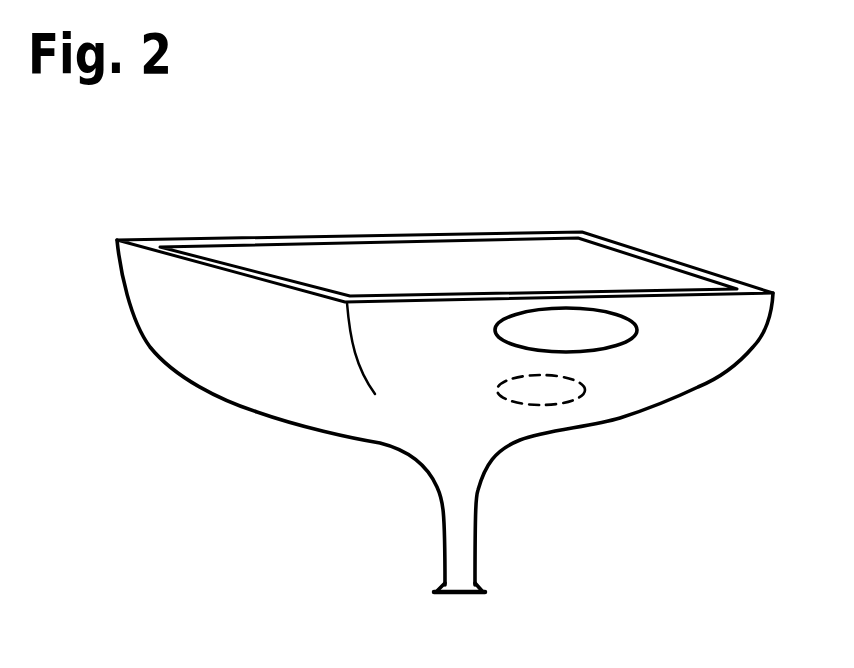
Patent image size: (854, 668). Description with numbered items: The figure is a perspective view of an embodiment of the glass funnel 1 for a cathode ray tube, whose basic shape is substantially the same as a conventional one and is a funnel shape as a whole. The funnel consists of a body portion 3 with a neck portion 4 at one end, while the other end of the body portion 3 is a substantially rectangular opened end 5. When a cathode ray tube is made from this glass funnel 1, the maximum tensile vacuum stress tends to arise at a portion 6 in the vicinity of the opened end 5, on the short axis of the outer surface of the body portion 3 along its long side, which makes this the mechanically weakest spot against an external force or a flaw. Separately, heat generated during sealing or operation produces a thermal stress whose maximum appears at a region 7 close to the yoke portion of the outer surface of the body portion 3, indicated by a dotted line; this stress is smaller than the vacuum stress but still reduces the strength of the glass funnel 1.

The glass funnel 1 is at (258, 409).
The body portion 3 is at (652, 375).
The neck portion 4 is at (464, 553).
The opened end 5 is at (343, 237).
The portion of maximum tensile vacuum stress 6 is at (560, 323).
The region of maximum thermal stress 7 is at (547, 388).